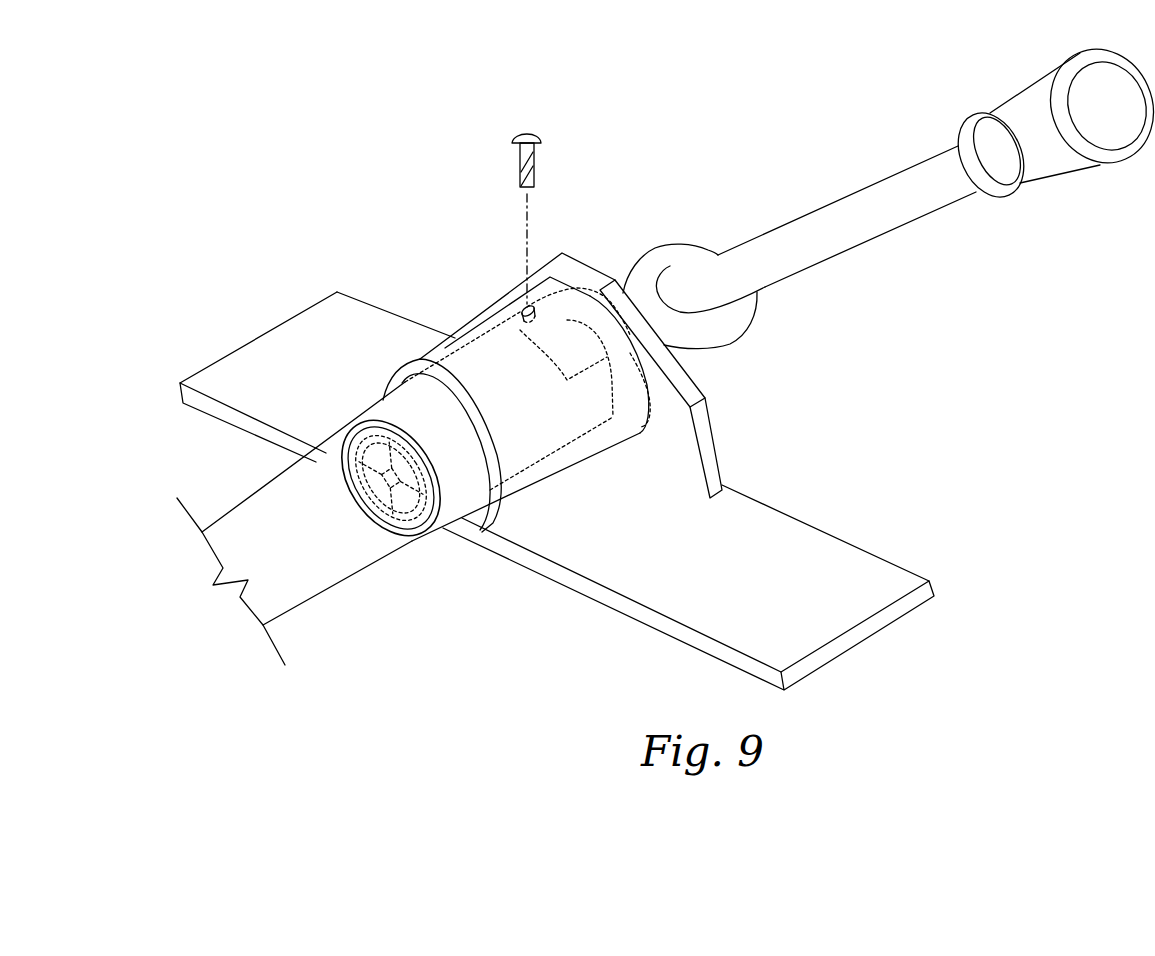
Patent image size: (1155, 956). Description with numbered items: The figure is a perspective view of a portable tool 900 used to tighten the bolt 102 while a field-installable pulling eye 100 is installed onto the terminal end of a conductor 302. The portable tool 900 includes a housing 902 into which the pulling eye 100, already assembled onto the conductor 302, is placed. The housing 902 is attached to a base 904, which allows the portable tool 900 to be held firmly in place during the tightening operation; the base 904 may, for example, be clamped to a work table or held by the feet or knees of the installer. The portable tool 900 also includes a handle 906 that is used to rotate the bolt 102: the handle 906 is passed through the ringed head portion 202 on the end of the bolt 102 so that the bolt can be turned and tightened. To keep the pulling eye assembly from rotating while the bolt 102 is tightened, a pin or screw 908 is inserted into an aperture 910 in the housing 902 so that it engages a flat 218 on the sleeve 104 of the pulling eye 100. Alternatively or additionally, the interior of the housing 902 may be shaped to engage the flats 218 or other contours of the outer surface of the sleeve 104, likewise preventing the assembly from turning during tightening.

The portable tool 900 is at (258, 118).
The pin or screw 908 is at (564, 152).
The bolt 102 is at (662, 237).
The aperture 910 is at (528, 305).
The housing 902 is at (456, 341).
The sleeve 104 is at (398, 424).
The pulling eye 100 is at (461, 451).
The flat 218 is at (565, 356).
The conductor 302 is at (323, 553).
The head portion 202 is at (712, 325).
The handle 906 is at (877, 210).
The base 904 is at (668, 595).